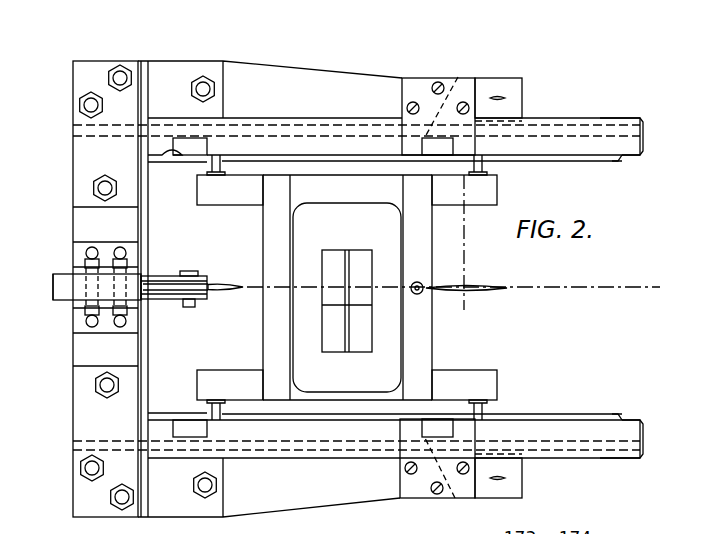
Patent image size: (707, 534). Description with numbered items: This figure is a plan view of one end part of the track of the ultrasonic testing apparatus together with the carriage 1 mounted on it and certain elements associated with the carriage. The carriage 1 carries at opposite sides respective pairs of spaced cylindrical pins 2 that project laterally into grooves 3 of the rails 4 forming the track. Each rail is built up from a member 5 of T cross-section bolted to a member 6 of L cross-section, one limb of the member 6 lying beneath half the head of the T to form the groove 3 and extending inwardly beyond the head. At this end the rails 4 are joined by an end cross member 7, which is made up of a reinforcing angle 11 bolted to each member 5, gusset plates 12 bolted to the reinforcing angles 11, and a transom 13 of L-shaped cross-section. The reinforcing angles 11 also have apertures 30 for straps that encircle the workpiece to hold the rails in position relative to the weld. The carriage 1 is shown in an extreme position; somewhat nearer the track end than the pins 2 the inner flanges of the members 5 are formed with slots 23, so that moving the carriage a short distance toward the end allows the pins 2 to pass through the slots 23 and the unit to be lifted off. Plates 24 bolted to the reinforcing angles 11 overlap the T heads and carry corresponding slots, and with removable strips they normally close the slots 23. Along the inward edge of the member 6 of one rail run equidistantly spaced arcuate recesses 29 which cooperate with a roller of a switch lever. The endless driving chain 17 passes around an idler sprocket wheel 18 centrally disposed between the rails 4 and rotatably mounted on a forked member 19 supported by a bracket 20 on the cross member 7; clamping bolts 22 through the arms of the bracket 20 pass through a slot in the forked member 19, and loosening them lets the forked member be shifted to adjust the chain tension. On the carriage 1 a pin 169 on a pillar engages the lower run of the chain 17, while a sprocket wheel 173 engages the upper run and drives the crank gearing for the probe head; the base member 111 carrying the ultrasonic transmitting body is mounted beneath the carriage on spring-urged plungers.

The carriage 1 is at (417, 218).
The cylindrical pins 2 is at (210, 167).
The grooves 3 is at (517, 145).
The rails 4 is at (600, 118).
The member of T cross-section 5 is at (623, 147).
The member of L cross-section 6 is at (625, 158).
The end cross member 7 is at (65, 365).
The reinforcing angle 11 is at (272, 87).
The gusset plates 12 is at (153, 75).
The transom 13 is at (85, 226).
The endless driving chain 17 is at (553, 287).
The idler sprocket wheel 18 is at (200, 289).
The forked member 19 is at (72, 295).
The bracket 20 is at (70, 309).
The clamping bolts 22 is at (83, 265).
The slots 23 is at (187, 140).
The plates 24 is at (410, 90).
The arcuate recesses 29 is at (392, 158).
The apertures 30 is at (497, 97).
The base member 111 is at (385, 307).
The pin 169 is at (421, 284).
The sprocket wheel 173 is at (478, 285).